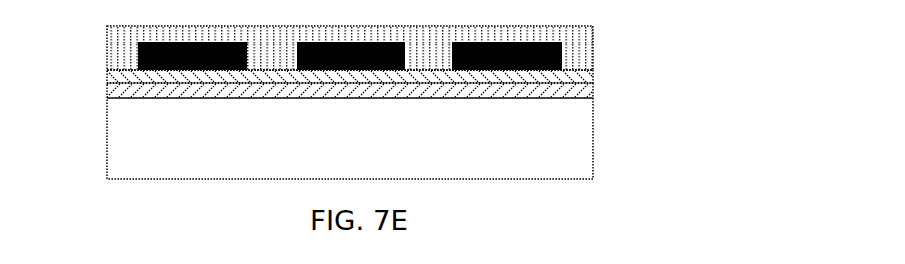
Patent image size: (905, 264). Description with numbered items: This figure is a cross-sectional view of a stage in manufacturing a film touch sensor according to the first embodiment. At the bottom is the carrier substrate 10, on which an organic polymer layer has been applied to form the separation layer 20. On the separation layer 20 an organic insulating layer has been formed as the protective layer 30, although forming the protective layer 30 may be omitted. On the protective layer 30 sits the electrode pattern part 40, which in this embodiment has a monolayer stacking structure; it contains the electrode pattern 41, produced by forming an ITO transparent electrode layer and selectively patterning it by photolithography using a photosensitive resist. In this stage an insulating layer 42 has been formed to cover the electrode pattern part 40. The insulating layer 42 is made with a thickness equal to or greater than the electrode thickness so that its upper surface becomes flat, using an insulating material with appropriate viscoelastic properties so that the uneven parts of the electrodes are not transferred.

The carrier substrate 10 is at (593, 140).
The separation layer 20 is at (593, 88).
The protective layer 30 is at (107, 73).
The electrode pattern part 40 is at (394, 49).
The electrode pattern 41 is at (562, 55).
The insulating layer 42 is at (594, 35).